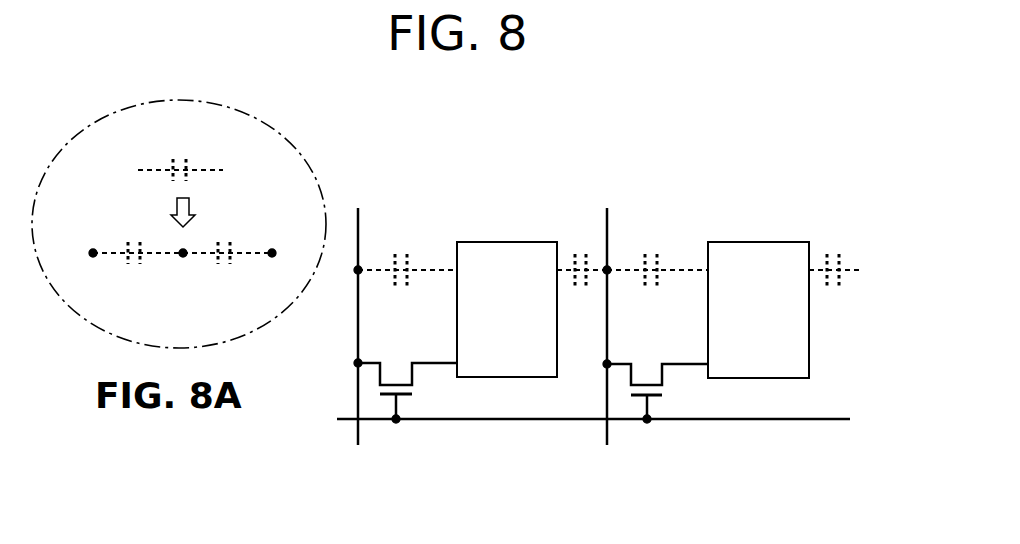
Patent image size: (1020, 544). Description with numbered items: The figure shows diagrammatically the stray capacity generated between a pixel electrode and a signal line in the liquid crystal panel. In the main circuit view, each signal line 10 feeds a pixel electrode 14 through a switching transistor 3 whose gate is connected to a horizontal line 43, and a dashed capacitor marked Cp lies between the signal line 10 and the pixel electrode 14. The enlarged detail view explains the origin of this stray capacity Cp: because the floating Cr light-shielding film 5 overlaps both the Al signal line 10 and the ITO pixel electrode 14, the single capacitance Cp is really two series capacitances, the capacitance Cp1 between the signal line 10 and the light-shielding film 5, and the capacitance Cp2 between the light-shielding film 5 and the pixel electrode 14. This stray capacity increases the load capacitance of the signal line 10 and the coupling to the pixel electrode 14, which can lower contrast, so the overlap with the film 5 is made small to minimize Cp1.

In FIG. 8, the signal line 10 is at (607, 222).
In FIG. 8A, the signal line 10 is at (93, 250).
In FIG. 8, the pixel electrode 14 is at (762, 242).
In FIG. 8A, the pixel electrode 14 is at (272, 250).
In FIG. 8, the thin film transistor 3 is at (673, 392).
In FIG. 8, the scanning line 43 is at (783, 421).
In FIG. 8A, the light-shielding film 5 is at (183, 257).
In FIG. 8, the stray capacity Cp is at (327, 230).
In FIG. 8A, the stray capacity Cp is at (180, 149).
In FIG. 8A, the capacitance between signal line and light-shielding film Cp1 is at (129, 272).
In FIG. 8A, the parasitic capacitance component 2 Cp2 is at (226, 272).